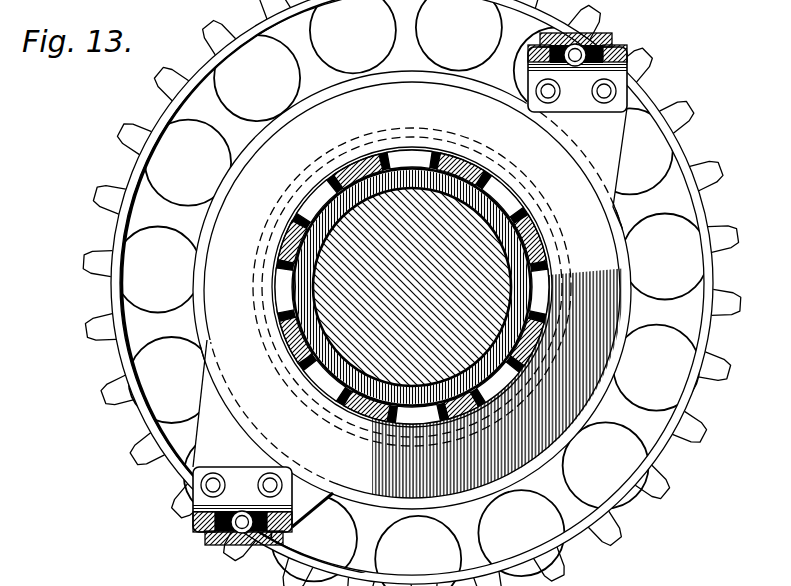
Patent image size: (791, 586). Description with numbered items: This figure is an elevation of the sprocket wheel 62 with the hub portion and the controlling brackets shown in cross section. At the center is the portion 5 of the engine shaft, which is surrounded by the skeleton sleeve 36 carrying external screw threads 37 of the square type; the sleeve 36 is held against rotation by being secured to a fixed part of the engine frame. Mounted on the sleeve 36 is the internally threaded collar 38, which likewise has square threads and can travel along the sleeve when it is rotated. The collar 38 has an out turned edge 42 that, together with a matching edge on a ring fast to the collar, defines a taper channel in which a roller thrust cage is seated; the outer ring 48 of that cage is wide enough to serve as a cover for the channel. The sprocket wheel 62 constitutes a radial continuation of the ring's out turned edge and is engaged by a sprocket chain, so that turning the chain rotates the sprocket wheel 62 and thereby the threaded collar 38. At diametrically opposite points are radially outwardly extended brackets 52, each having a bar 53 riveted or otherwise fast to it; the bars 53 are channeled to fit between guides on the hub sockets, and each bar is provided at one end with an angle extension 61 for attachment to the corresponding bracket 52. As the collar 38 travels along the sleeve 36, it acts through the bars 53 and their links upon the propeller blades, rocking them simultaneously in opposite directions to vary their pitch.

The portion of the shaft 5 is at (478, 247).
The skeleton sleeve 36 is at (290, 250).
The external screw threads 37 is at (297, 355).
The internally threaded collar 38 is at (285, 233).
The out turned edge 42 is at (566, 290).
The outer ring 48 is at (618, 355).
The bracket 52 is at (410, 313).
The bar 53 is at (606, 35).
The angle extension 61 is at (408, 288).
The sprocket wheel 62 is at (110, 392).